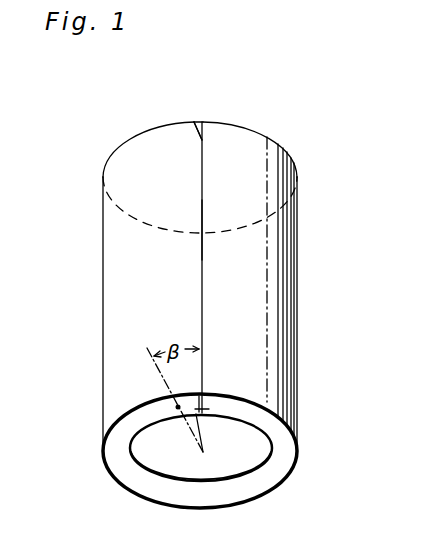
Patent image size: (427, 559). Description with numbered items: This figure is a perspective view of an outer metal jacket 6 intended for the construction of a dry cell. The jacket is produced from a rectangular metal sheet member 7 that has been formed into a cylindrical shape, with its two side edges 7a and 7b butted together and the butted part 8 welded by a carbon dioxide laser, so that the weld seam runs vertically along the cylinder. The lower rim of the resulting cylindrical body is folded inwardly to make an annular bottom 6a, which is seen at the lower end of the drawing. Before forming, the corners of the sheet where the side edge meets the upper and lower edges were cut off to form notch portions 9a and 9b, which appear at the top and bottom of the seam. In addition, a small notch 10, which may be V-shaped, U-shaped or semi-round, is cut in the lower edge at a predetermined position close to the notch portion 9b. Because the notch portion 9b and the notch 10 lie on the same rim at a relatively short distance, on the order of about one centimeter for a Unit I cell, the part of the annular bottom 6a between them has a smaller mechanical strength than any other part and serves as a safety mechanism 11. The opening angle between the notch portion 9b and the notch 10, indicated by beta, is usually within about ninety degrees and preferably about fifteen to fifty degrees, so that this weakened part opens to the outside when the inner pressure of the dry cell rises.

The outer metal jacket 6 is at (290, 97).
The annular bottom 6a is at (262, 486).
The rectangular metal sheet member 7 is at (298, 272).
The side edge 7a is at (208, 203).
The side edge 7b is at (203, 226).
The butted part 8 is at (202, 315).
The notch portion 9a is at (199, 121).
The notch portion 9b is at (203, 410).
The notch 10 is at (178, 411).
The safety mechanism 11 is at (192, 408).